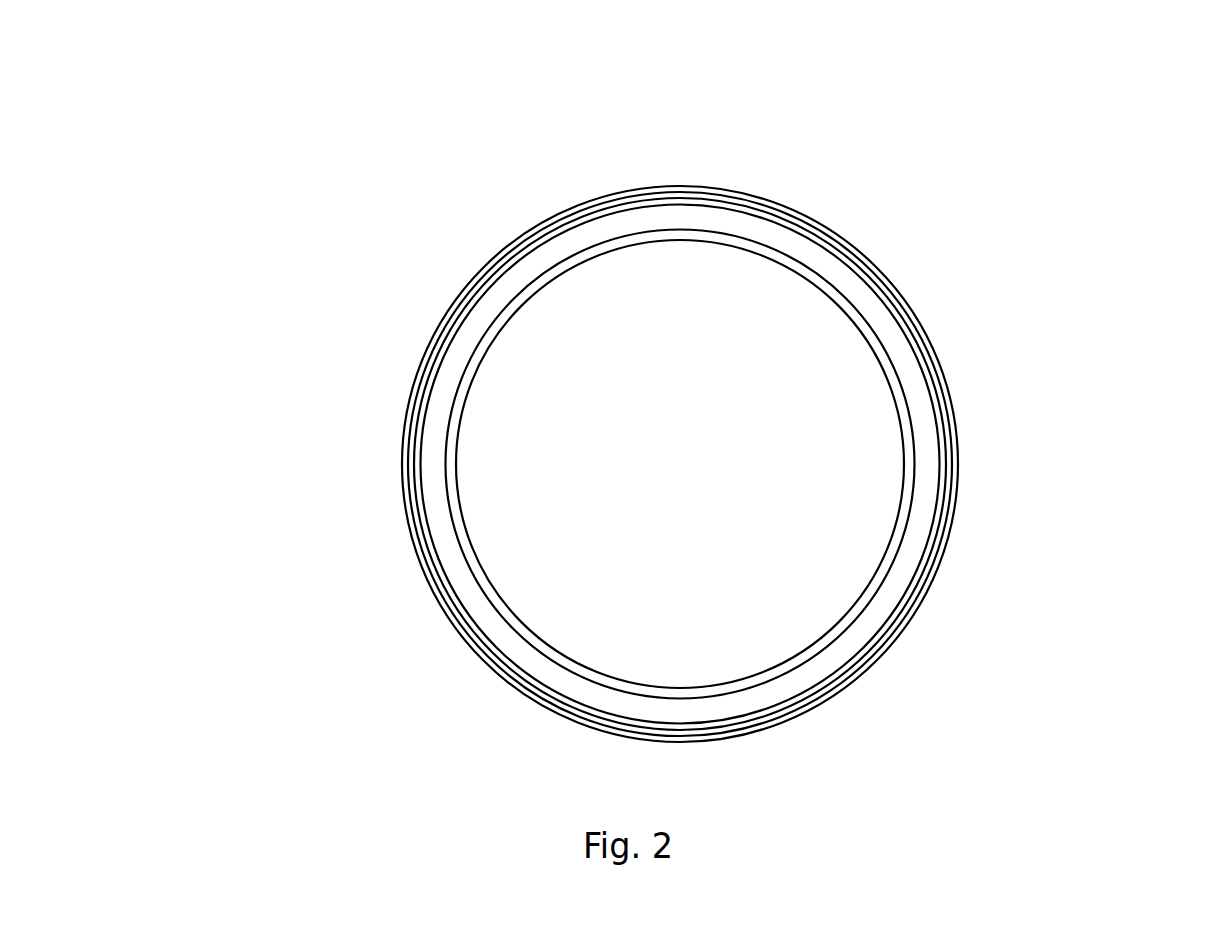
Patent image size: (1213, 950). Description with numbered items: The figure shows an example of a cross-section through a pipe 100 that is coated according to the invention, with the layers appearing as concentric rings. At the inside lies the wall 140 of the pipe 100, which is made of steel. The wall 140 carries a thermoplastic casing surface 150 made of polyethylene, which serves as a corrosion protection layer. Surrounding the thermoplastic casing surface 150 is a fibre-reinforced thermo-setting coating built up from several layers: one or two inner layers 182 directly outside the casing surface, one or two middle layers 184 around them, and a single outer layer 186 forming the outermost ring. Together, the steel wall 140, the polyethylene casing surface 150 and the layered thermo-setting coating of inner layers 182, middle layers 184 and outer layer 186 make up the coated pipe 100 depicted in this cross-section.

The pipe 100 is at (963, 232).
The wall 140 is at (455, 412).
The thermoplastic casing surface 150 is at (433, 465).
The inner layers 182 is at (417, 507).
The middle layers 184 is at (427, 568).
The outer layer 186 is at (437, 597).